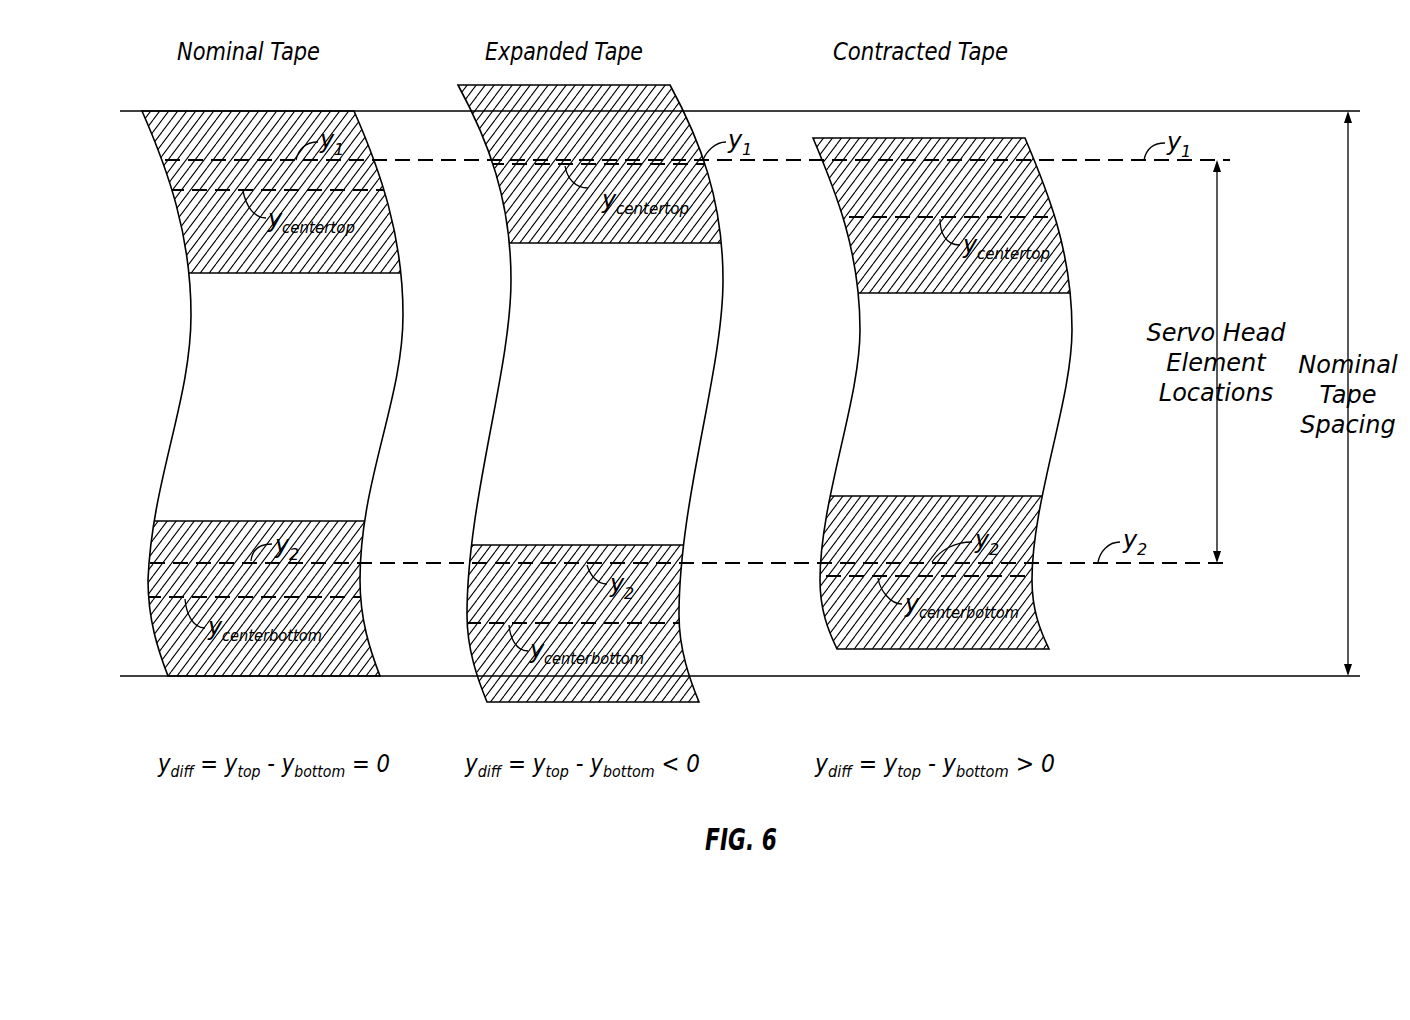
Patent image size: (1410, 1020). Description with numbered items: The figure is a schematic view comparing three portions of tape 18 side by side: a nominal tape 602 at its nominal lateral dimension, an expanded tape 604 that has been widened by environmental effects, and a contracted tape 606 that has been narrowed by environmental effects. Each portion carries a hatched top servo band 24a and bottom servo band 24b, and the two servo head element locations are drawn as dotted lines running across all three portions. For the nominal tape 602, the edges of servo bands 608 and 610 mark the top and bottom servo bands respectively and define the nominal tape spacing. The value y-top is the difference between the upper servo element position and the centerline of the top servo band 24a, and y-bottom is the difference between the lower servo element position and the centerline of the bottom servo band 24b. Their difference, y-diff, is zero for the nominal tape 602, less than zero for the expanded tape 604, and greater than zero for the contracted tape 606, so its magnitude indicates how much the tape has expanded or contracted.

The magnetic tape 18 is at (634, 381).
The top servo band 24a is at (394, 257).
The bottom servo band 24b is at (373, 663).
The nominal tape 602 is at (304, 126).
The expanded tape 604 is at (668, 92).
The contracted tape 606 is at (1030, 152).
The edge of top servo band 608 is at (165, 110).
The edge of bottom servo band 610 is at (216, 678).